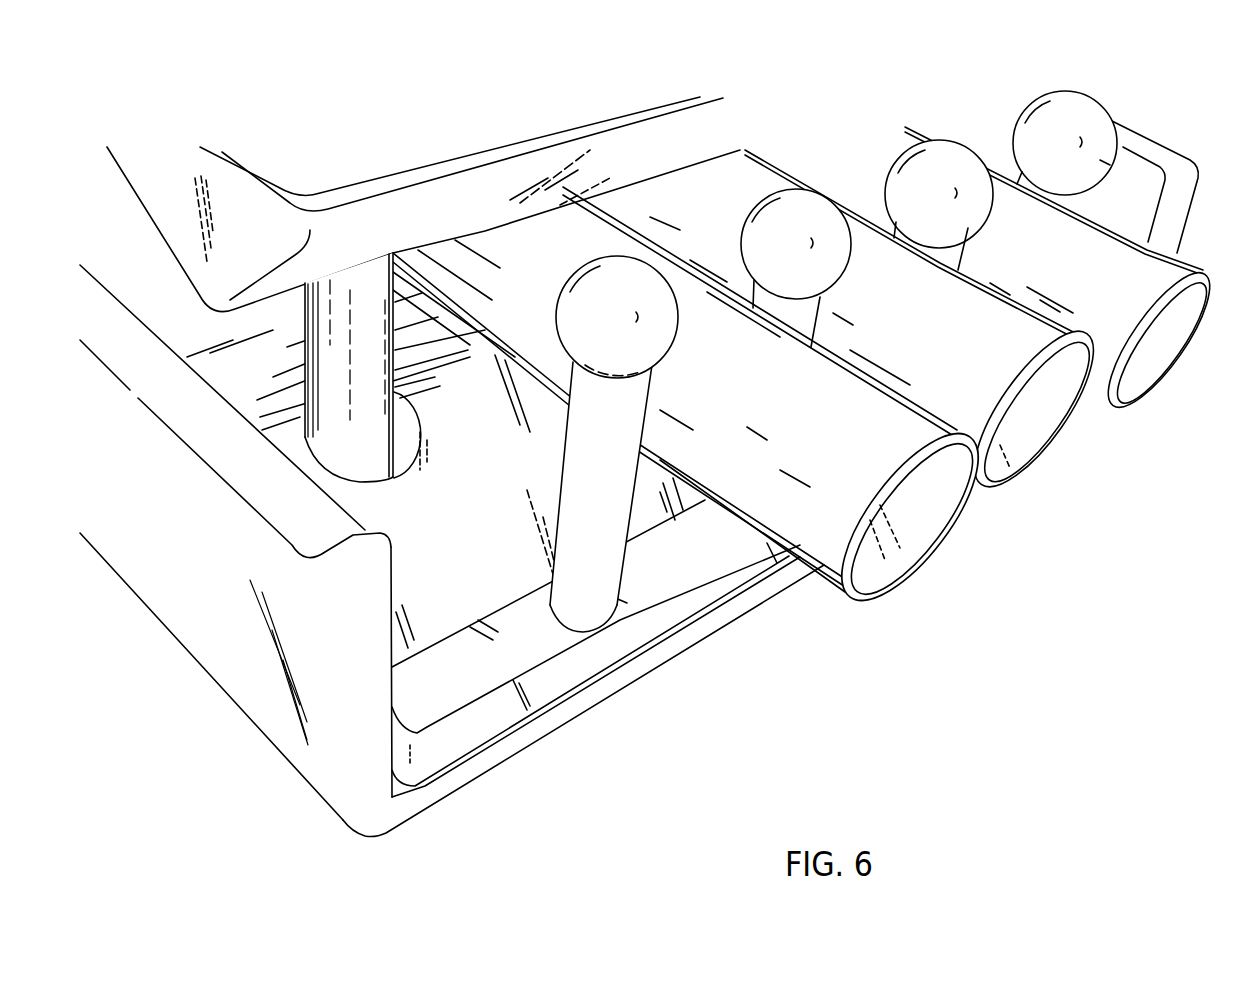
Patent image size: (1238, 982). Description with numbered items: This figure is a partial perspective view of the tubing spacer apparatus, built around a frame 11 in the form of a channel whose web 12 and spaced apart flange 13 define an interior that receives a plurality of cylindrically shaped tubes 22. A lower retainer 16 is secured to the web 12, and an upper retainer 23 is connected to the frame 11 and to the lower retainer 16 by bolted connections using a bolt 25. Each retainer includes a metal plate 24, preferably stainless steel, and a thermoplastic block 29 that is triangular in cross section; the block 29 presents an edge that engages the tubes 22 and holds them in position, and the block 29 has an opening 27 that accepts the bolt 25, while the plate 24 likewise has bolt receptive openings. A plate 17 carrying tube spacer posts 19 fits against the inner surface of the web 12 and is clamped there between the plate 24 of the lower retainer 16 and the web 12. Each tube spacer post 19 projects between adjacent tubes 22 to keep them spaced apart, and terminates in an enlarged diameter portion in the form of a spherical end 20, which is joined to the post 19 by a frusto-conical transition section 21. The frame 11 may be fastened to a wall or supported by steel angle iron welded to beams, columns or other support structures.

The frame 11 is at (1182, 180).
The web 12 is at (668, 652).
The flange 13 is at (345, 705).
The lower retainer 16 is at (423, 610).
The plate 17 is at (690, 560).
The tube spacer post 19 is at (578, 603).
The spherical end 20 is at (1090, 117).
The frusto-conical transition section 21 is at (593, 368).
The tube 22 is at (1147, 360).
The upper retainer 23 is at (313, 167).
The plate 24 is at (396, 181).
The bolt 25 is at (370, 457).
The opening 27 is at (430, 412).
The thermoplastic triangular block 29 is at (353, 245).